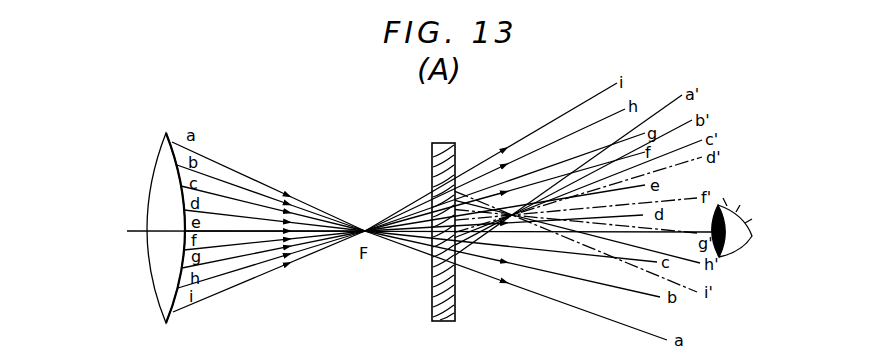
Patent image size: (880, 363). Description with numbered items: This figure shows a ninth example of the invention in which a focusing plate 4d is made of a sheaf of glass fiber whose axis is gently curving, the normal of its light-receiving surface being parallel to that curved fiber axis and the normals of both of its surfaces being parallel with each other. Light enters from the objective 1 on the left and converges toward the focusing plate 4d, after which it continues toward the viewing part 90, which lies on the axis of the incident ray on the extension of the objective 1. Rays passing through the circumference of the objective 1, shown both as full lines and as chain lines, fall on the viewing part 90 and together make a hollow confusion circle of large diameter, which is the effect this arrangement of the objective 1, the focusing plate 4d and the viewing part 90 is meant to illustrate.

The objective 1 is at (163, 143).
The focusing plate 4d is at (445, 143).
The viewing part 90 is at (746, 223).